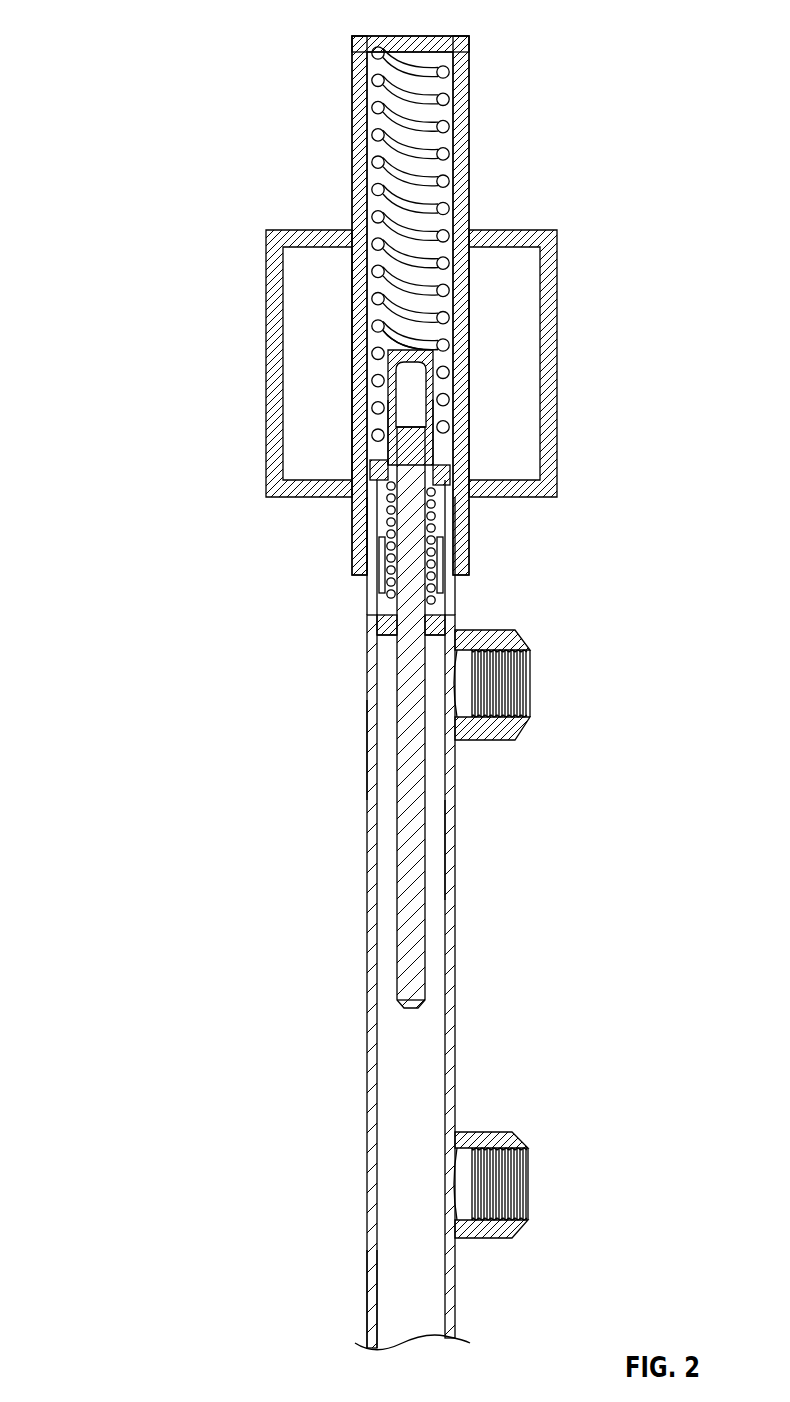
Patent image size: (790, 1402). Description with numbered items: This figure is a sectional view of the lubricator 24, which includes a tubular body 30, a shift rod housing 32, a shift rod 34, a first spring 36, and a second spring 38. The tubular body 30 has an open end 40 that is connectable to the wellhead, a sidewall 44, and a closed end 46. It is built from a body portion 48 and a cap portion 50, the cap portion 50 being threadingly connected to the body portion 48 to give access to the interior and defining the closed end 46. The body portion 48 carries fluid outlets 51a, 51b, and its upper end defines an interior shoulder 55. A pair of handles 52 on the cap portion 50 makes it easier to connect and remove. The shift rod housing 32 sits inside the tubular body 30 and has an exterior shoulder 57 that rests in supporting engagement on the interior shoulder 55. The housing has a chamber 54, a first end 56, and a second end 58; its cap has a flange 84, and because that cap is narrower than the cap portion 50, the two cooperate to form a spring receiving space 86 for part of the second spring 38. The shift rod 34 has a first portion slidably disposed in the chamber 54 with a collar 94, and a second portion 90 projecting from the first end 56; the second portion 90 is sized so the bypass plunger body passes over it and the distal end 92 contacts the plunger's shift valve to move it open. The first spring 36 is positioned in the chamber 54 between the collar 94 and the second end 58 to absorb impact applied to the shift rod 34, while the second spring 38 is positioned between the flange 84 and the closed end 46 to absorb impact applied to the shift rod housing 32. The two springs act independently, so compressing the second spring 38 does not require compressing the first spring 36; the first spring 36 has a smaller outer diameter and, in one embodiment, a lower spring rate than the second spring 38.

The lubricator 24 is at (112, 57).
The tubular body 30 is at (352, 78).
The shift rod housing 32 is at (376, 527).
The shift rod 34 is at (397, 920).
The first spring 36 is at (380, 570).
The second spring 38 is at (378, 140).
The open end 40 is at (367, 1316).
The sidewall 44 is at (366, 772).
The closed end 46 is at (430, 37).
The body portion 48 is at (455, 1005).
The cap portion 50 is at (470, 186).
The fluid outlet 51a is at (518, 736).
The fluid outlet 51b is at (518, 1236).
The handles 52 is at (266, 368).
The chamber 54 is at (437, 377).
The interior shoulder 55 is at (372, 470).
The first end 56 is at (390, 642).
The exterior shoulder 57 is at (450, 480).
The second end 58 is at (395, 330).
The flange 84 is at (447, 468).
The spring receiving space 86 is at (370, 420).
The second portion 90 is at (441, 852).
The distal end 92 is at (410, 1010).
The collar 94 is at (380, 622).